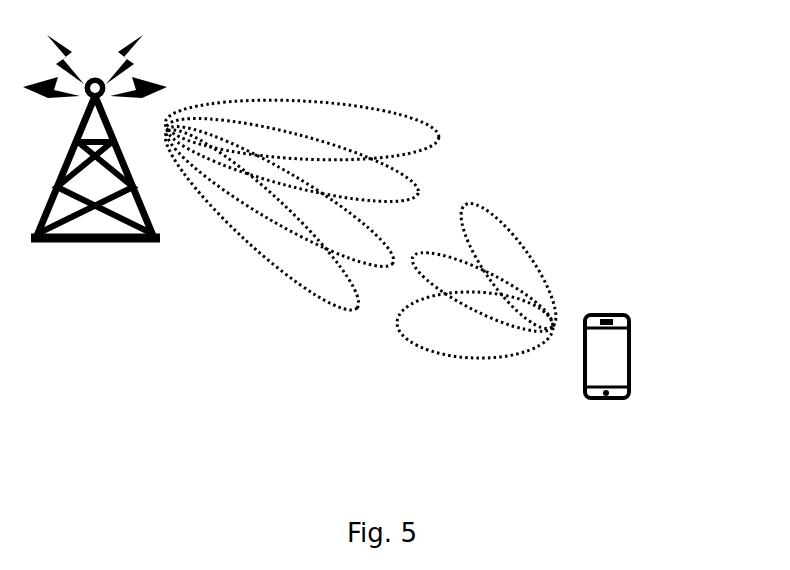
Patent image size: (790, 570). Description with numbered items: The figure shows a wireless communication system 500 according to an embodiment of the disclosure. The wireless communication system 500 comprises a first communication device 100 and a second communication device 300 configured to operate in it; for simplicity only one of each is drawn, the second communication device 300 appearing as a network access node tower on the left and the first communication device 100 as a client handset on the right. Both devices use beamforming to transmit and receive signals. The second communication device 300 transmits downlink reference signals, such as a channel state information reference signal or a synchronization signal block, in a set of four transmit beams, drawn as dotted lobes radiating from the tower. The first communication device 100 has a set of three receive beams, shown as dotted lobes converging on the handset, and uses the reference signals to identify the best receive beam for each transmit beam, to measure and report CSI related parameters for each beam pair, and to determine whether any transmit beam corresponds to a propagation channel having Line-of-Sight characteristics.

The first communication device 100 is at (600, 402).
The second communication device 300 is at (60, 244).
The wireless communication system 500 is at (581, 70).